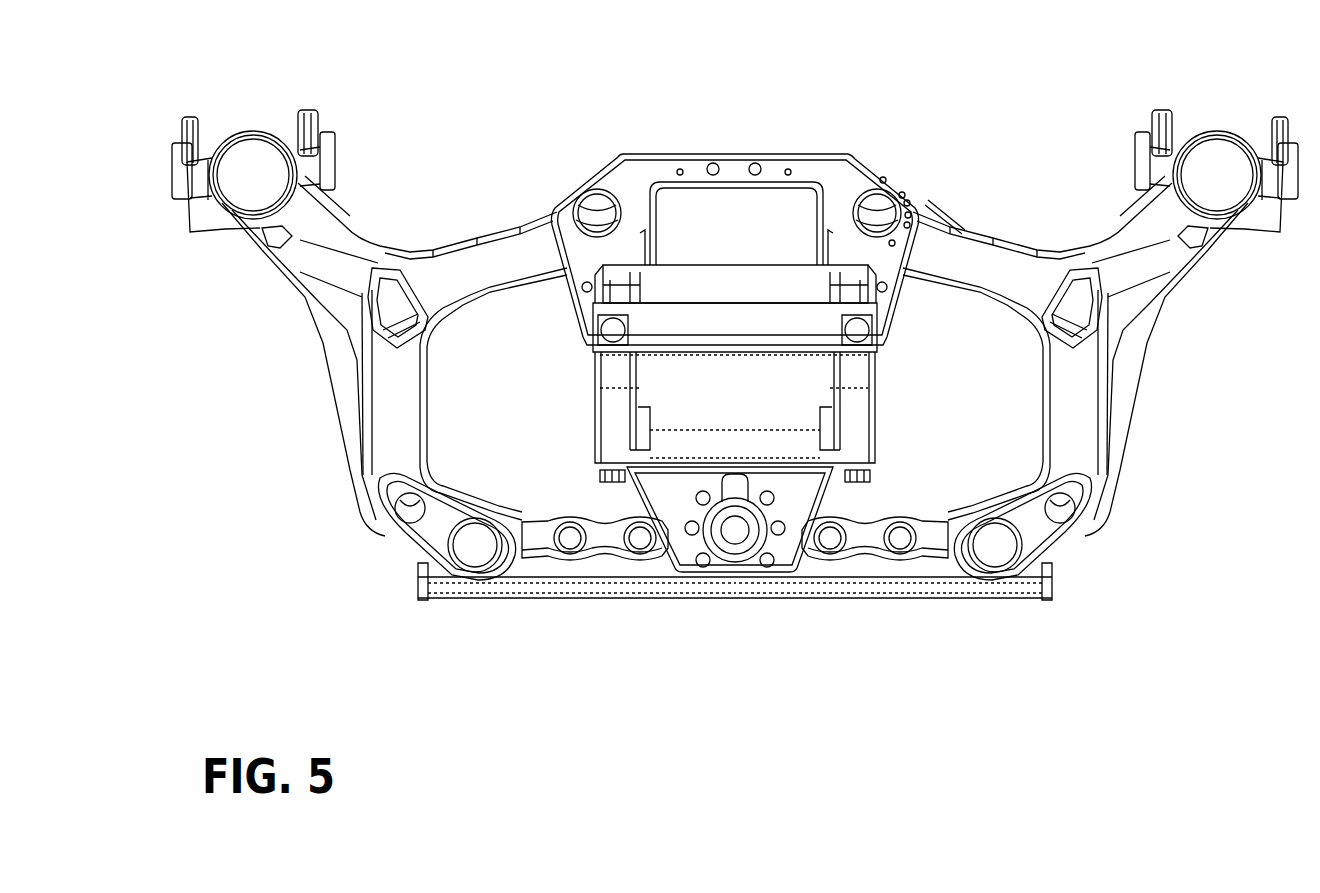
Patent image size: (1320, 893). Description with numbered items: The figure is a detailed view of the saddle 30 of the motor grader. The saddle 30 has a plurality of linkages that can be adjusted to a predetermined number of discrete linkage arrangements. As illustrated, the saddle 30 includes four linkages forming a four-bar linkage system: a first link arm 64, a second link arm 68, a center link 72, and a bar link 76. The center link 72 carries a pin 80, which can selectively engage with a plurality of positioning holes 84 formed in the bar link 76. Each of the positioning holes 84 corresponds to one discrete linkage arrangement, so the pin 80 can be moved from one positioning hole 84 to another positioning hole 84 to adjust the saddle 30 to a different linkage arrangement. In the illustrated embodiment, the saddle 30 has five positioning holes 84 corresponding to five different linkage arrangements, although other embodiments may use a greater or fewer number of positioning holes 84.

The saddle 30 is at (872, 98).
The first link arm 64 is at (492, 252).
The second link arm 68 is at (990, 260).
The center link 72 is at (736, 175).
The bar link 76 is at (857, 572).
The pin 80 is at (739, 578).
The positioning holes 84 is at (632, 547).